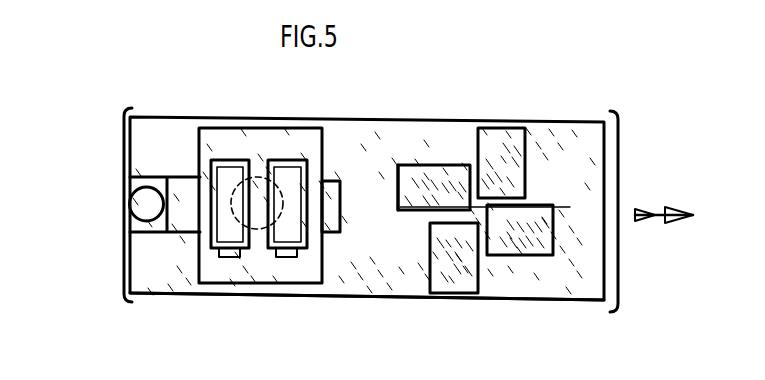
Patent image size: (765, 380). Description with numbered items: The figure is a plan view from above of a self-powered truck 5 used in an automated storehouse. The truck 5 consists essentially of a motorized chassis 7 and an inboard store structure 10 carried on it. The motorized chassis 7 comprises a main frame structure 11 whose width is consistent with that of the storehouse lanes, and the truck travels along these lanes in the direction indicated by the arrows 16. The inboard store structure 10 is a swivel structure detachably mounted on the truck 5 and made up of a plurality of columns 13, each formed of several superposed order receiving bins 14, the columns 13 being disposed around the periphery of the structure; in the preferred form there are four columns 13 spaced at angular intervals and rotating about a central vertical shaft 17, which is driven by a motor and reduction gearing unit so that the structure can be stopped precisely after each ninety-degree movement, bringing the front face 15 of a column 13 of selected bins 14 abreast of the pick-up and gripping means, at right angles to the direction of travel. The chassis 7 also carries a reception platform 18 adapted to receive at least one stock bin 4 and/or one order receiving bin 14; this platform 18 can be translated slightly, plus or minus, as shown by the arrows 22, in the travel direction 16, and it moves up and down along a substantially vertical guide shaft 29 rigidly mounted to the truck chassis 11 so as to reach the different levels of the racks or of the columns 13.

The self-powered truck 5 is at (122, 125).
The motorized chassis 7 is at (580, 158).
The main frame structure 11 is at (367, 281).
The guide shaft 29 is at (130, 201).
The reception platform 18 is at (252, 138).
The stock bin 4 is at (232, 196).
The arrows 22 is at (246, 268).
The order receiving bin 14 is at (303, 252).
The inboard store structure 10 is at (447, 185).
The front face 15 is at (394, 173).
The column 13 is at (518, 140).
The central vertical shaft 17 is at (485, 210).
The arrows 16 is at (657, 222).